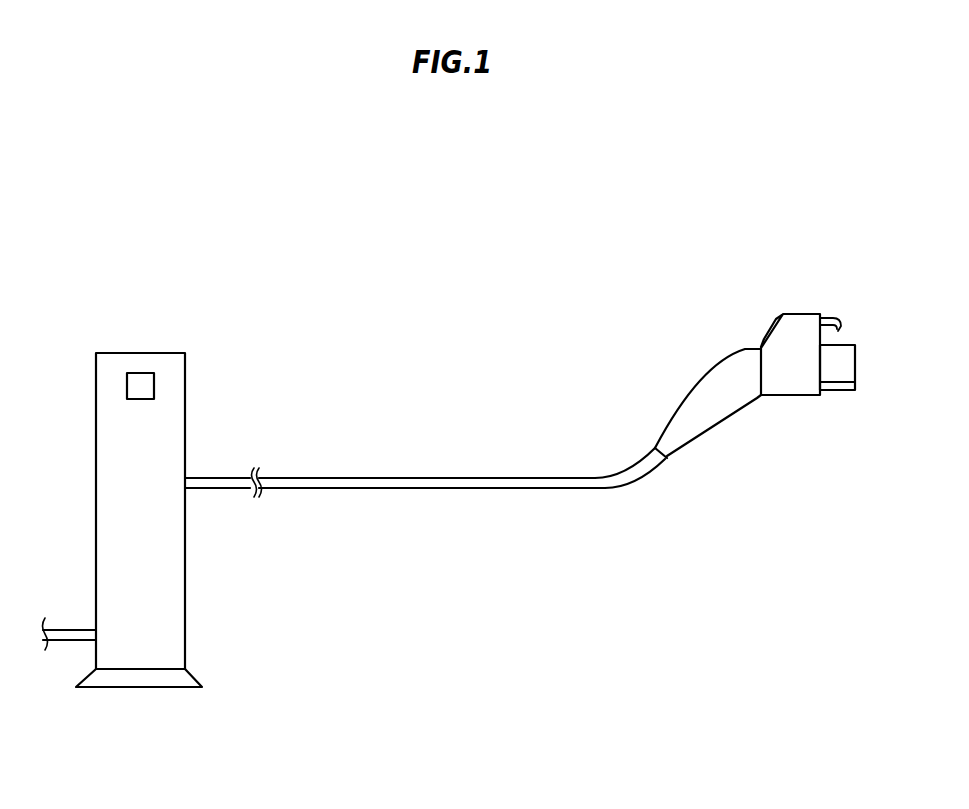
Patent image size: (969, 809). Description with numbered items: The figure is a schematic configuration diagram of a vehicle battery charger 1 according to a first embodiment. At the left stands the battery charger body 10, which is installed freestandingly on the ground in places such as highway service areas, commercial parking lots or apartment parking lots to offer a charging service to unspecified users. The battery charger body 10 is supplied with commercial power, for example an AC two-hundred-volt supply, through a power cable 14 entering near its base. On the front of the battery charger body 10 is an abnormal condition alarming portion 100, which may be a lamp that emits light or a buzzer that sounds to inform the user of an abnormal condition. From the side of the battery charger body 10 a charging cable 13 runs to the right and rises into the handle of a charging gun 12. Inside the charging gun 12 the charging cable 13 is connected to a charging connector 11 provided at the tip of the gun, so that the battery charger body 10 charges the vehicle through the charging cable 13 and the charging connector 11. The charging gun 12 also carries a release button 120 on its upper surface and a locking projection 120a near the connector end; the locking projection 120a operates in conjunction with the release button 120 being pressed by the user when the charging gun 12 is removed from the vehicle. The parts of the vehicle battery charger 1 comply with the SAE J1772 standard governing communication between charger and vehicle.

The vehicle battery charger 1 is at (287, 267).
The battery charger body 10 is at (140, 353).
The abnormal condition alarming portion 100 is at (154, 383).
The charging connector 11 is at (851, 391).
The charging gun 12 is at (718, 377).
The release button 120 is at (768, 323).
The locking projection 120a is at (840, 323).
The charging cable 13 is at (445, 478).
The power cable 14 is at (75, 628).